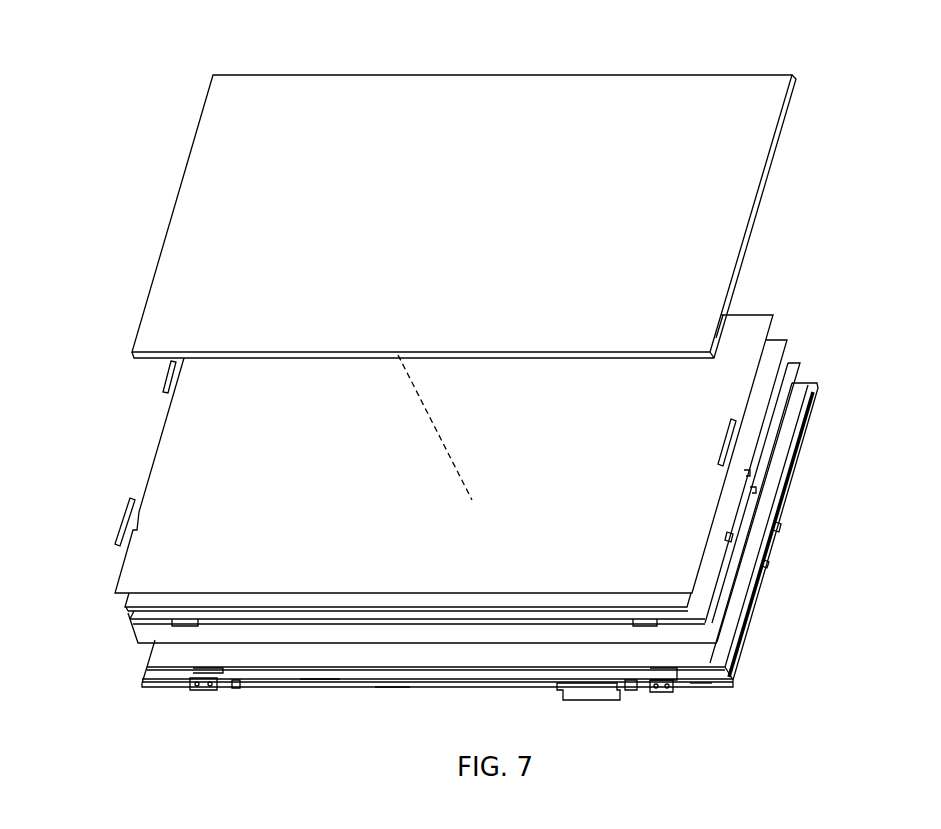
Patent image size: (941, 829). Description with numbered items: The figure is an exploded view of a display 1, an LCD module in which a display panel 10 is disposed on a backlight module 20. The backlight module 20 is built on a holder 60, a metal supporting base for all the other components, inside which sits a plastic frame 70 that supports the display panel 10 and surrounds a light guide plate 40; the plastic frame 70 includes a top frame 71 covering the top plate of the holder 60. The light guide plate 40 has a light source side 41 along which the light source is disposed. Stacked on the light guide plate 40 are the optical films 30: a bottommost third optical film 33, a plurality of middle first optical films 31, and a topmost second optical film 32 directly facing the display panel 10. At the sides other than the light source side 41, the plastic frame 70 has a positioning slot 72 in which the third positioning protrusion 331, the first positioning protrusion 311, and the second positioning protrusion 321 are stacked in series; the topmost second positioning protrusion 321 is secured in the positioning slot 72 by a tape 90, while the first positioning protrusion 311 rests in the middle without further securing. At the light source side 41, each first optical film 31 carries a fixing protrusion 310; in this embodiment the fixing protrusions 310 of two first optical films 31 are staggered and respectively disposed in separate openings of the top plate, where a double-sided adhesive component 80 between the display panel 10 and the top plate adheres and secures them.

The display 1 is at (126, 103).
The display panel 10 is at (705, 88).
The backlight module 20 is at (872, 213).
The optical films 30 is at (842, 192).
The first optical film 31 is at (787, 345).
The second optical film 32 is at (742, 327).
The third optical film 33 is at (795, 372).
The light guide plate 40 is at (263, 668).
The light source side 41 is at (315, 668).
The holder 60 is at (392, 686).
The plastic frame 70 is at (743, 643).
The top frame 71 is at (700, 683).
The positioning slot 72 is at (778, 527).
The double-sided adhesive component 80 is at (432, 607).
The tape 90 is at (165, 380).
The fixing protrusion 310 is at (185, 626).
The first positioning protrusion 311 is at (747, 473).
The second positioning protrusion 321 is at (730, 537).
The third positioning protrusion 331 is at (767, 563).